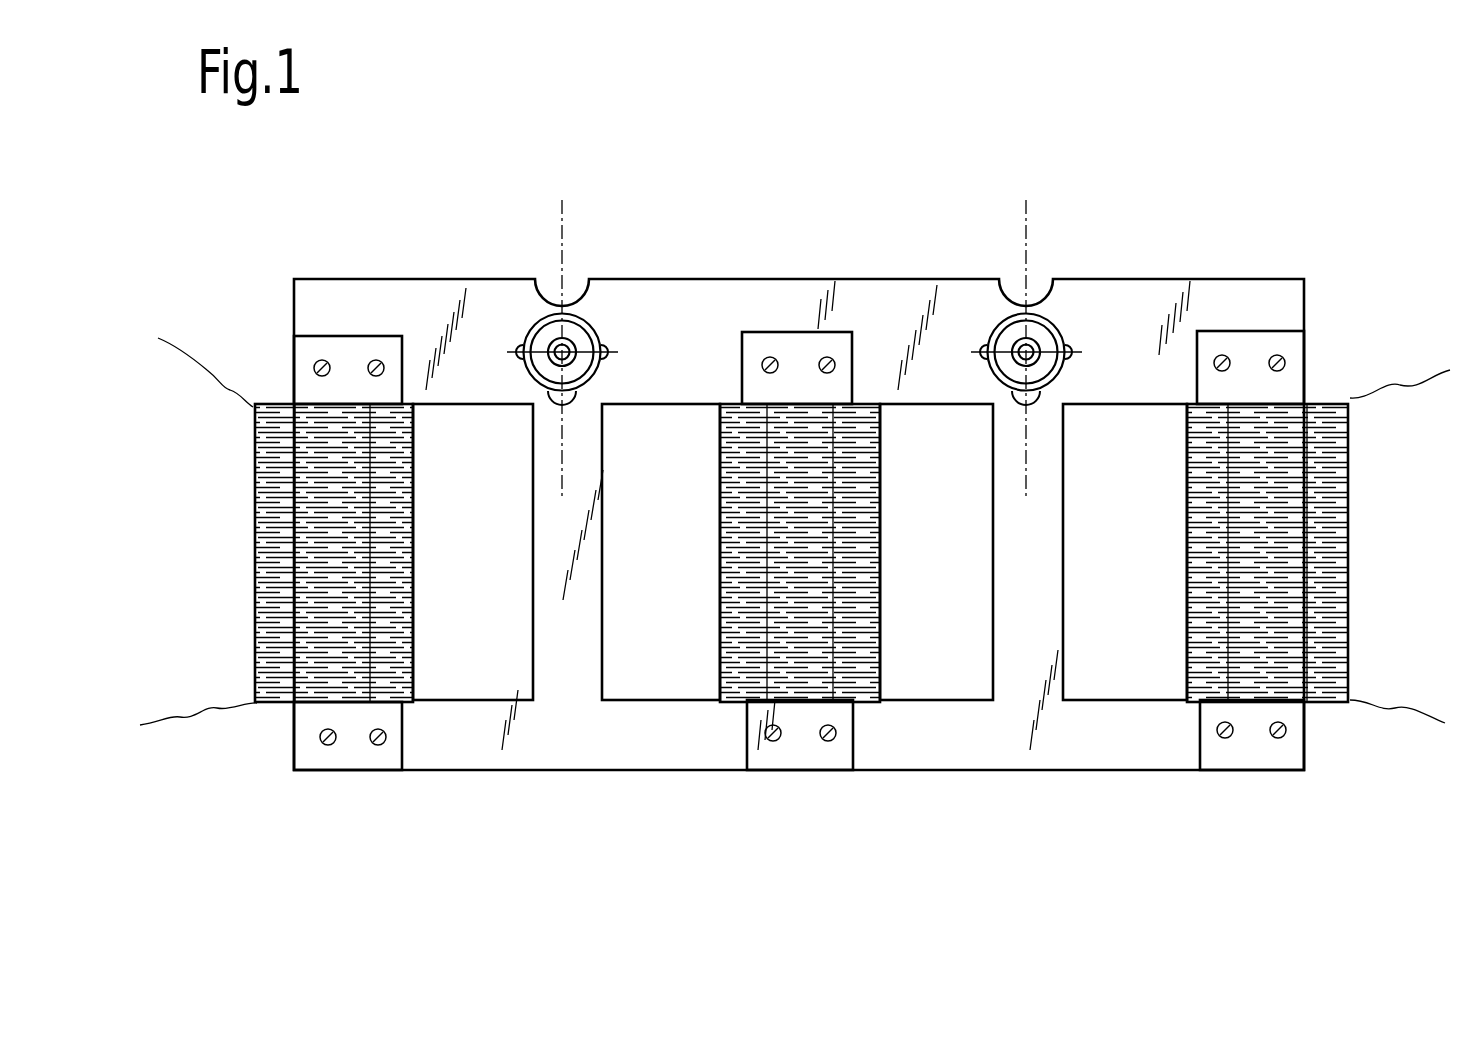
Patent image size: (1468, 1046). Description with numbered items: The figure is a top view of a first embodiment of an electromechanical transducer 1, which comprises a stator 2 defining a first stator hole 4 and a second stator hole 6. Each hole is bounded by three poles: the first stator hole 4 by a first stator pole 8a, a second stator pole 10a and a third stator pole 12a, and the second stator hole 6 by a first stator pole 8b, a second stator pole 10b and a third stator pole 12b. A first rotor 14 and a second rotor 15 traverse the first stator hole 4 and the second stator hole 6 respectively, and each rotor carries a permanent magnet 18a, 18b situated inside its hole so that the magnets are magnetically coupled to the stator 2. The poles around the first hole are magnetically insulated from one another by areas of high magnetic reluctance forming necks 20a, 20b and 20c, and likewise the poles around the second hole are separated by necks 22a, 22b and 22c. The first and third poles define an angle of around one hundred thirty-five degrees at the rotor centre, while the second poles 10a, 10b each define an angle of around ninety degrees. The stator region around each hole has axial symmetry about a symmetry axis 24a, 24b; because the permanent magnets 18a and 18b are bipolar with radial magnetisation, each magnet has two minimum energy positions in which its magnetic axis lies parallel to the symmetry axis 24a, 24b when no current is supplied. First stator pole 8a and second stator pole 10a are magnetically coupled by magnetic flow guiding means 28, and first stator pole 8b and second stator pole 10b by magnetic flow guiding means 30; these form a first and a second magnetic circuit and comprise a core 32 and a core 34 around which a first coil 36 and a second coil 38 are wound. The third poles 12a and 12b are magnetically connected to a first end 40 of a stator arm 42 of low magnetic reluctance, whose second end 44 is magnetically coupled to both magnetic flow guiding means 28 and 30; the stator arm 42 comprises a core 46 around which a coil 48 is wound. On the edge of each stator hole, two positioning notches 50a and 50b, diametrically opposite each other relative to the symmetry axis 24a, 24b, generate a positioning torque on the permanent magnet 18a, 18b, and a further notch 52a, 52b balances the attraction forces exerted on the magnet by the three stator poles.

The electromechanical transducer 1 is at (1327, 163).
The stator 2 is at (798, 266).
The first stator hole 4 is at (603, 310).
The second stator hole 6 is at (1058, 303).
The first stator pole 8a is at (473, 347).
The first stator pole 8b is at (1122, 332).
The second stator pole 10a is at (553, 443).
The second stator pole 10b is at (1010, 442).
The third stator pole 12a is at (660, 340).
The third stator pole 12b is at (920, 330).
The first rotor 14 is at (545, 340).
The second rotor 15 is at (1010, 320).
The permanent magnet 18a is at (583, 367).
The permanent magnet 18b is at (1050, 368).
The neck 20a is at (573, 283).
The neck 20b is at (527, 410).
The neck 20c is at (608, 412).
The neck 22a is at (1035, 273).
The neck 22b is at (988, 407).
The neck 22c is at (1068, 407).
The symmetry axis 24a is at (563, 487).
The symmetry axis 24b is at (1027, 473).
The magnetic flow guiding means 28 is at (322, 313).
The magnetic flow guiding means 30 is at (1265, 308).
The core 32 is at (328, 558).
The core 34 is at (1268, 560).
The first coil 36 is at (274, 674).
The second coil 38 is at (1333, 617).
The first end of stator arm 40 is at (797, 355).
The stator arm 42 is at (853, 705).
The second end of stator arm 44 is at (798, 742).
The core 46 is at (800, 643).
The coil 48 is at (867, 603).
The positioning notch 50a is at (510, 340).
The positioning notch 50b is at (625, 335).
The notch 52a is at (573, 412).
The notch 52b is at (1035, 410).